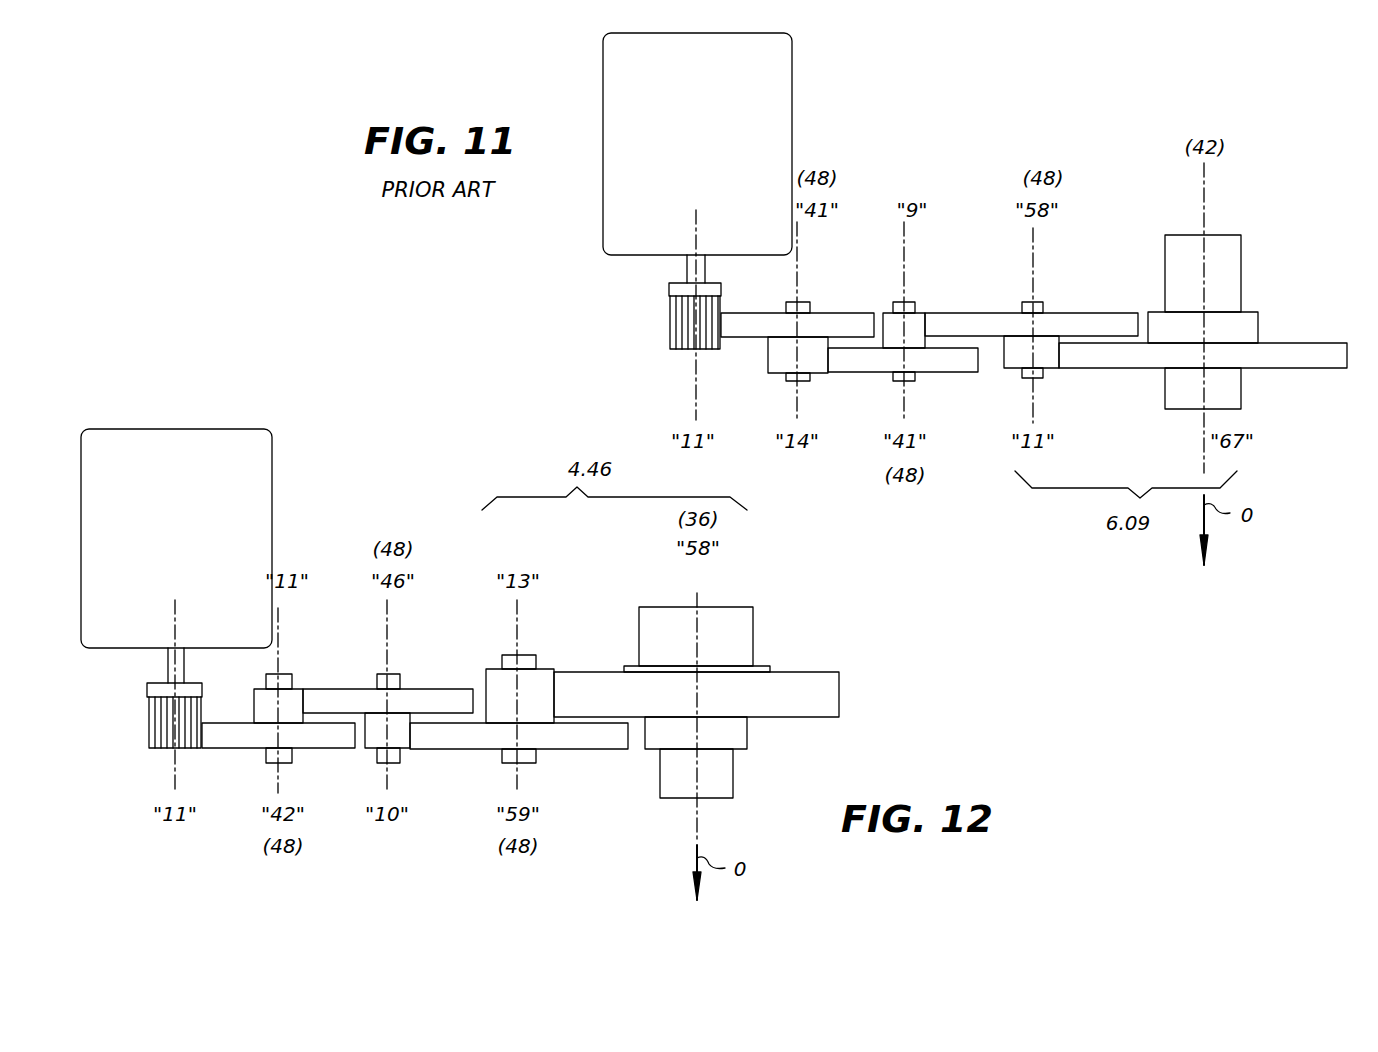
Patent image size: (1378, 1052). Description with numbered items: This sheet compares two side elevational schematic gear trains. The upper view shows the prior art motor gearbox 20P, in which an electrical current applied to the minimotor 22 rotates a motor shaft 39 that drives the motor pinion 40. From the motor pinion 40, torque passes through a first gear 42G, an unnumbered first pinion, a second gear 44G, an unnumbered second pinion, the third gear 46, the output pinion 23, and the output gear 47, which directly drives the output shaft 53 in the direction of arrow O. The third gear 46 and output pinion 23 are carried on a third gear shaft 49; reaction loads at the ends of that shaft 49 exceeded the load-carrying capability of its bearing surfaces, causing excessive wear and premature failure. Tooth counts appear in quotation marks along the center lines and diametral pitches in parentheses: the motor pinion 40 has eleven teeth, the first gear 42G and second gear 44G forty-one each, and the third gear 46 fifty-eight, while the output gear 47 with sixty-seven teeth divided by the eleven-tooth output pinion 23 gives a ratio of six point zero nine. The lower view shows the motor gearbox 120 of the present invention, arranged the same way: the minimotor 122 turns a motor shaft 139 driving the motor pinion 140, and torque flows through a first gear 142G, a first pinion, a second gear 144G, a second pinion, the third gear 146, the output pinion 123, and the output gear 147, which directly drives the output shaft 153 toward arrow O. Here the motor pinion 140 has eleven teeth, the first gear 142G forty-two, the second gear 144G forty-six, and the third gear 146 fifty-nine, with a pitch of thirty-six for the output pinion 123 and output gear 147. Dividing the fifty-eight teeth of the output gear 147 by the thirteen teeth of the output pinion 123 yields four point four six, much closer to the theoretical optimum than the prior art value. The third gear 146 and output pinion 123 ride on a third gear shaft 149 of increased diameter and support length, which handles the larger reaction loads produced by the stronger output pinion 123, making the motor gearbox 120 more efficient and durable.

In FIG. 11, the minimotor 22 is at (603, 122).
In FIG. 11, the motor shaft 39 is at (687, 265).
In FIG. 11, the motor pinion 40 is at (670, 330).
In FIG. 11, the first gear 42G is at (852, 310).
In FIG. 11, the second gear 44G is at (856, 374).
In FIG. 11, the third gear 46 is at (962, 310).
In FIG. 11, the third gear shaft 49 is at (1045, 303).
In FIG. 11, the output pinion 23 is at (1055, 370).
In FIG. 11, the output gear 47 is at (1290, 343).
In FIG. 11, the output shaft 53 is at (1165, 271).
In FIG. 11, the prior art motor gearbox 20P is at (959, 152).
In FIG. 12, the minimotor 122 is at (272, 478).
In FIG. 12, the motor gearbox 120 is at (455, 530).
In FIG. 12, the motor shaft 139 is at (168, 656).
In FIG. 12, the motor pinion 140 is at (147, 718).
In FIG. 12, the first gear 142G is at (227, 720).
In FIG. 12, the second gear 144G is at (337, 688).
In FIG. 12, the third gear 146 is at (454, 752).
In FIG. 12, the output pinion 123 is at (486, 680).
In FIG. 12, the third gear shaft 149 is at (540, 660).
In FIG. 12, the output gear 147 is at (840, 692).
In FIG. 12, the output shaft 153 is at (745, 637).